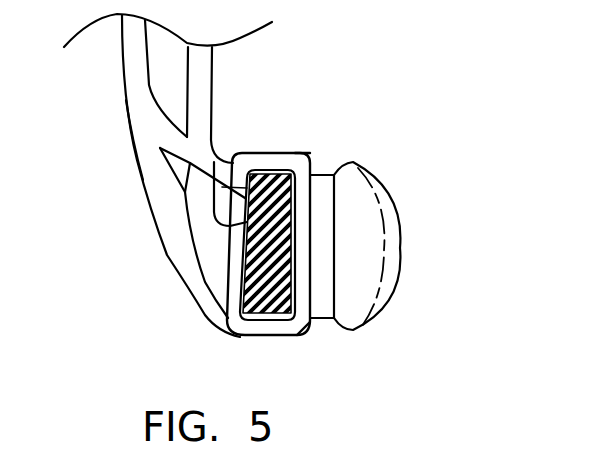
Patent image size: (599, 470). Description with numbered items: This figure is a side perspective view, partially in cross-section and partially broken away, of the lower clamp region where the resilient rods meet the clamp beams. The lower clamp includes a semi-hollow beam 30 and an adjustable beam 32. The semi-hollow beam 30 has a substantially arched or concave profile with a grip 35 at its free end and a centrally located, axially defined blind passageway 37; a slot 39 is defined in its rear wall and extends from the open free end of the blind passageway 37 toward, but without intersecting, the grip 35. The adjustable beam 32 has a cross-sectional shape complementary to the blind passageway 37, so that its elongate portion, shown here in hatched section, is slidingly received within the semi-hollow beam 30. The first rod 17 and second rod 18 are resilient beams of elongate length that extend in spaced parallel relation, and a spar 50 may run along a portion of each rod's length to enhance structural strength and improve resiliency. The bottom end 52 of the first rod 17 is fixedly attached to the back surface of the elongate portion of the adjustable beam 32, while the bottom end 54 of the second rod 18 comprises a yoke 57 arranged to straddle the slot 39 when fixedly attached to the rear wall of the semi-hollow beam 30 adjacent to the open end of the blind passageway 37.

The first rod 17 is at (187, 202).
The second rod 18 is at (137, 98).
The semi-hollow beam 30 is at (306, 155).
The adjustable beam 32 is at (310, 313).
The grip 35 is at (395, 244).
The blind passageway 37 is at (293, 150).
The slot 39 is at (237, 272).
The spar 50 is at (198, 60).
The bottom end 52 is at (237, 270).
The bottom end 54 is at (141, 180).
The yoke 57 is at (218, 152).